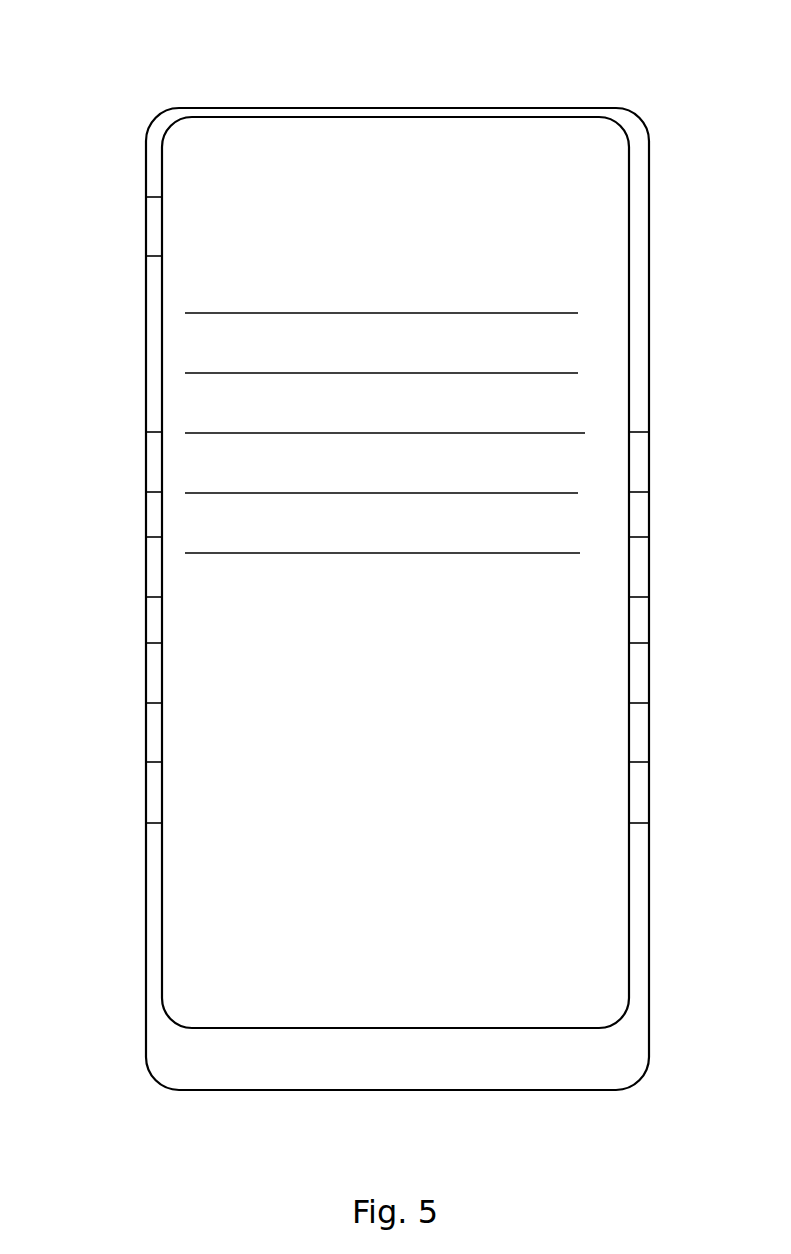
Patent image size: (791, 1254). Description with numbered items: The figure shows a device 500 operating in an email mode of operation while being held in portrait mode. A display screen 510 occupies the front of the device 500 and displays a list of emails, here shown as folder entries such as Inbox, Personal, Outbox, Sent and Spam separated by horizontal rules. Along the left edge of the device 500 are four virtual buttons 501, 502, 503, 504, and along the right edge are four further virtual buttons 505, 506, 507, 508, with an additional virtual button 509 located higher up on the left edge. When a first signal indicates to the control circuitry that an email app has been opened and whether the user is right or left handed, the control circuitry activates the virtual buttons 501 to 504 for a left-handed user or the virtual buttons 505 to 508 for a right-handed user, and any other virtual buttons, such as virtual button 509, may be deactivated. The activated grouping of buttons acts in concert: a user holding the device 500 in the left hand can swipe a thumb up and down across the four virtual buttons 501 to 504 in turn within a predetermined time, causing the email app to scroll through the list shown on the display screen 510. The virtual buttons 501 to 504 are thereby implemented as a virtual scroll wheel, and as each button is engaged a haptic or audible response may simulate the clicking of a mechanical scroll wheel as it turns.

The device 500 is at (650, 252).
The virtual button 501 is at (146, 470).
The virtual button 502 is at (146, 565).
The virtual button 503 is at (146, 672).
The virtual button 504 is at (146, 792).
The virtual button 505 is at (650, 462).
The virtual button 506 is at (650, 567).
The virtual button 507 is at (650, 672).
The virtual button 508 is at (650, 793).
The virtual button 509 is at (147, 222).
The display screen 510 is at (440, 148).